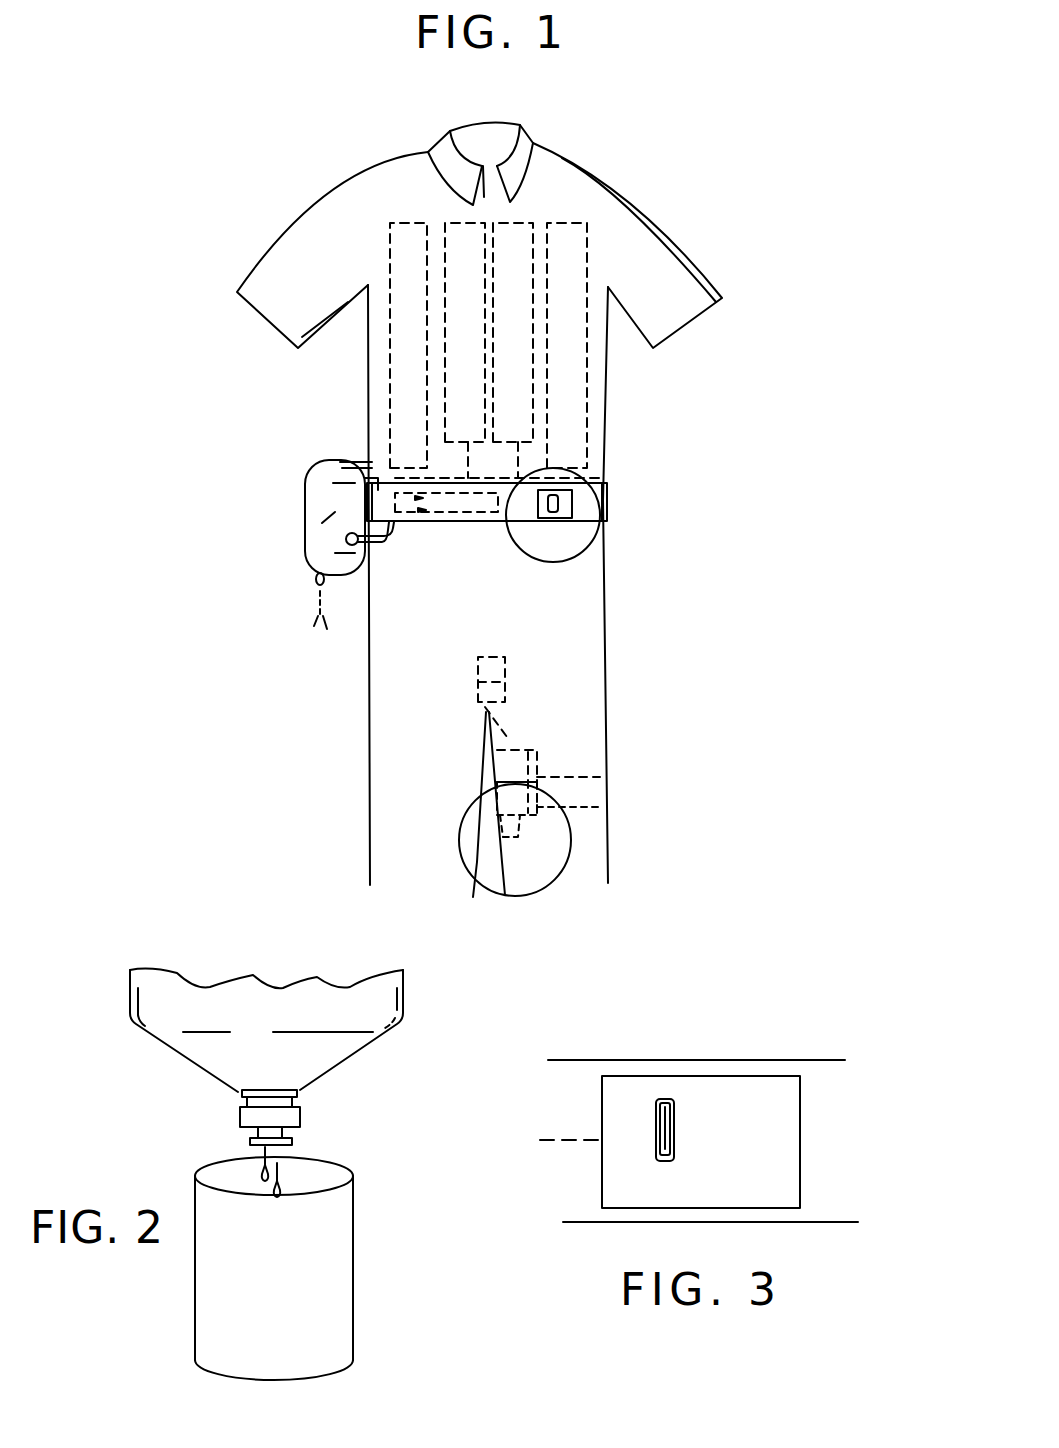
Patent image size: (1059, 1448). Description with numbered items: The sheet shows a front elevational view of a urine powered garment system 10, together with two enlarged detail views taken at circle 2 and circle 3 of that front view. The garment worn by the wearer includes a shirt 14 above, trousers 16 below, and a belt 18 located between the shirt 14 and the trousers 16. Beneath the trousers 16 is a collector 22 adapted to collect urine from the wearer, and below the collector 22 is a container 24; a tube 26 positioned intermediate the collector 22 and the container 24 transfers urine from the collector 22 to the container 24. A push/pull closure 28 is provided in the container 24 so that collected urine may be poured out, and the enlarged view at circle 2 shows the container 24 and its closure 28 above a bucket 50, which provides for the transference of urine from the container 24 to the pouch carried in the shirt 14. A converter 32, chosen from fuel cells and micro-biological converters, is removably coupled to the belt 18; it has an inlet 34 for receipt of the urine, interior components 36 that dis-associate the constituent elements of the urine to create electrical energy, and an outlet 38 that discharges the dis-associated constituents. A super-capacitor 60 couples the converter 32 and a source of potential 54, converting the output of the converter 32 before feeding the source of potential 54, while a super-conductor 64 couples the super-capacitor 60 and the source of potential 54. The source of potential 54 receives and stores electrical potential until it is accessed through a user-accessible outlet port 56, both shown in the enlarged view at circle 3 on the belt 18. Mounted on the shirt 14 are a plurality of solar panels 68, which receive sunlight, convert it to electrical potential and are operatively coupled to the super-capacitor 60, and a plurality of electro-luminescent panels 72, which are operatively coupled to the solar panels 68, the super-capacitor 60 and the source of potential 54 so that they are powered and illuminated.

In FIG. 1, the urine powered garment system 10 is at (223, 167).
In FIG. 1, the shirt 14 is at (405, 168).
In FIG. 1, the trousers 16 is at (408, 730).
In FIG. 1, the belt 18 is at (607, 508).
In FIG. 1, the collector 22 is at (507, 690).
In FIG. 1, the container 24 is at (537, 762).
In FIG. 2, the container 24 is at (152, 1044).
In FIG. 1, the tube 26 is at (507, 727).
In FIG. 2, the push/pull closure 28 is at (247, 1117).
In FIG. 1, the converter 32 is at (305, 480).
In FIG. 1, the inlet 34 is at (347, 458).
In FIG. 1, the interior components 36 is at (313, 523).
In FIG. 1, the outlet 38 is at (317, 575).
In FIG. 2, the bucket 50 is at (348, 1265).
In FIG. 1, the source of potential 54 is at (572, 497).
In FIG. 3, the source of potential 54 is at (800, 1165).
In FIG. 3, the user-accessible outlet port 56 is at (670, 1117).
In FIG. 1, the super-capacitor 60 is at (445, 533).
In FIG. 1, the super-conductor 64 is at (520, 507).
In FIG. 3, the super-conductor 64 is at (575, 1133).
In FIG. 1, the solar panels 68 is at (387, 270).
In FIG. 1, the electro-luminescent panels 72 is at (490, 265).
In FIG. 1, the circle 2 is at (500, 896).
In FIG. 1, the circle 3 is at (600, 533).